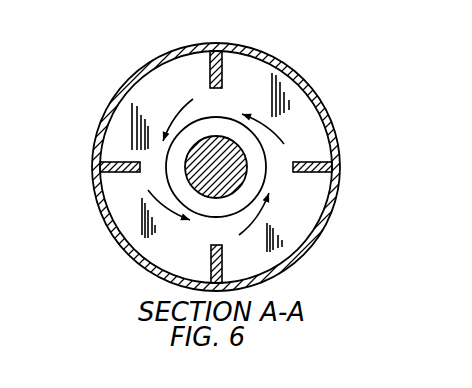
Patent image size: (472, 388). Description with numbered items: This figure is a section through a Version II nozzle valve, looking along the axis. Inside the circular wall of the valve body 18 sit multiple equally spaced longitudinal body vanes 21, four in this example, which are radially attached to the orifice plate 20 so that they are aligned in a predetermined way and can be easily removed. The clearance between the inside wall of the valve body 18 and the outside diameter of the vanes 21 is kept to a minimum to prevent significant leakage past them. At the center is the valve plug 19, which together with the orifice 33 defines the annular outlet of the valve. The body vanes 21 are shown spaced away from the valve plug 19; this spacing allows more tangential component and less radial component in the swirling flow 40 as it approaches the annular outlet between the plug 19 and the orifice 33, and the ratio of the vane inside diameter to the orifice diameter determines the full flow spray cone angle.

The valve body 18 is at (120, 82).
The valve plug 19 is at (255, 175).
The orifice plate 20 is at (313, 123).
The body vanes 21 is at (222, 72).
The orifice 33 is at (212, 218).
The flow 40 is at (185, 100).